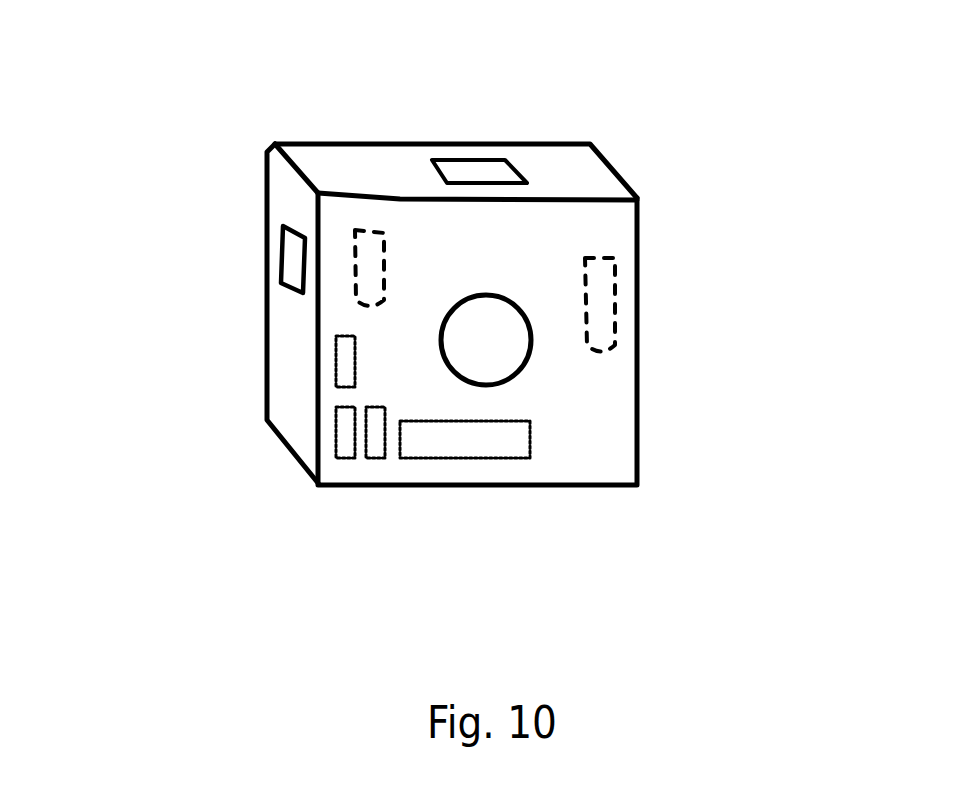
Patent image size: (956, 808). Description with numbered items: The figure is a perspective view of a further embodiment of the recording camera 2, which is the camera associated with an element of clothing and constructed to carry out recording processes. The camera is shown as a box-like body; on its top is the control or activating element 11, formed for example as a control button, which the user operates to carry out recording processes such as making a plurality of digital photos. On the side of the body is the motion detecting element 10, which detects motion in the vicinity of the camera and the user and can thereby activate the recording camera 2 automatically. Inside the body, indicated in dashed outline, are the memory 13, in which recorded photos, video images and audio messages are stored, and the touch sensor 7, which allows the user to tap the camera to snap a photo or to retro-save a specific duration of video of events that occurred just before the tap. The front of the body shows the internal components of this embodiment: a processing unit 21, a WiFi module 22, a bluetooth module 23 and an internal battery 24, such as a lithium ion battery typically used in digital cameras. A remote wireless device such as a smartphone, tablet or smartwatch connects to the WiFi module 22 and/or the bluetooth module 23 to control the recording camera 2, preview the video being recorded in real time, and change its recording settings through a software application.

The recording camera 2 is at (555, 457).
The touch sensor 7 is at (605, 285).
The motion detecting element 10 is at (284, 253).
The control or activating element 11 is at (518, 172).
The memory 13 is at (380, 262).
The processing unit 21 is at (320, 364).
The WiFi module 22 is at (320, 441).
The bluetooth module 23 is at (368, 472).
The internal battery 24 is at (441, 472).